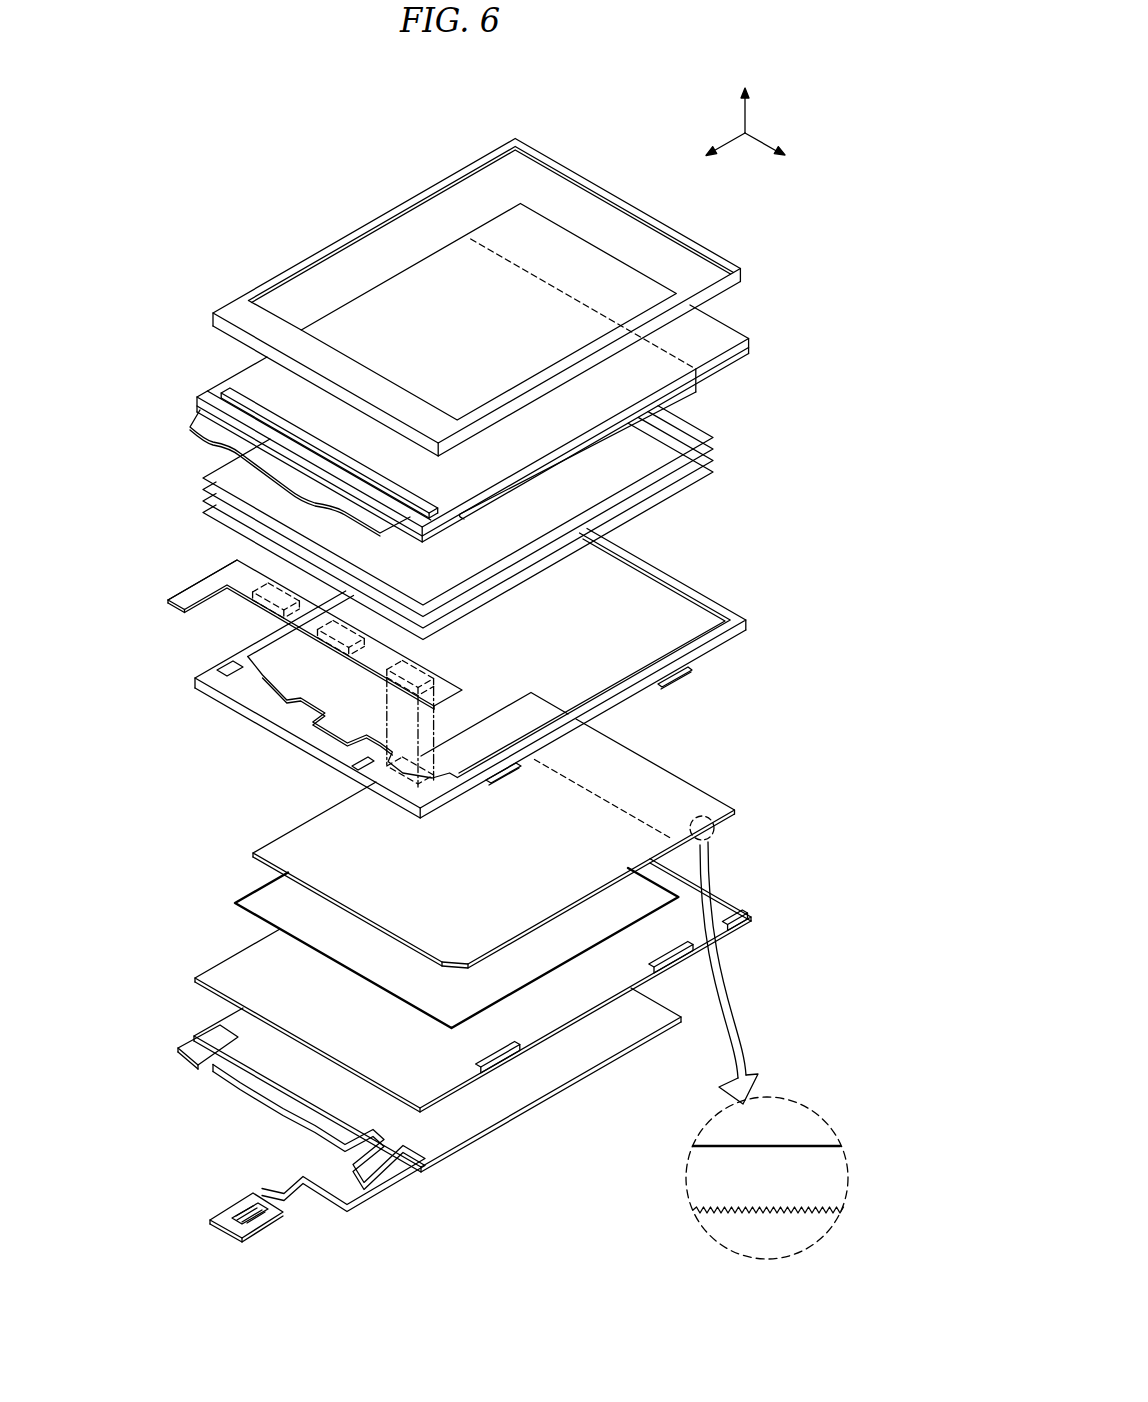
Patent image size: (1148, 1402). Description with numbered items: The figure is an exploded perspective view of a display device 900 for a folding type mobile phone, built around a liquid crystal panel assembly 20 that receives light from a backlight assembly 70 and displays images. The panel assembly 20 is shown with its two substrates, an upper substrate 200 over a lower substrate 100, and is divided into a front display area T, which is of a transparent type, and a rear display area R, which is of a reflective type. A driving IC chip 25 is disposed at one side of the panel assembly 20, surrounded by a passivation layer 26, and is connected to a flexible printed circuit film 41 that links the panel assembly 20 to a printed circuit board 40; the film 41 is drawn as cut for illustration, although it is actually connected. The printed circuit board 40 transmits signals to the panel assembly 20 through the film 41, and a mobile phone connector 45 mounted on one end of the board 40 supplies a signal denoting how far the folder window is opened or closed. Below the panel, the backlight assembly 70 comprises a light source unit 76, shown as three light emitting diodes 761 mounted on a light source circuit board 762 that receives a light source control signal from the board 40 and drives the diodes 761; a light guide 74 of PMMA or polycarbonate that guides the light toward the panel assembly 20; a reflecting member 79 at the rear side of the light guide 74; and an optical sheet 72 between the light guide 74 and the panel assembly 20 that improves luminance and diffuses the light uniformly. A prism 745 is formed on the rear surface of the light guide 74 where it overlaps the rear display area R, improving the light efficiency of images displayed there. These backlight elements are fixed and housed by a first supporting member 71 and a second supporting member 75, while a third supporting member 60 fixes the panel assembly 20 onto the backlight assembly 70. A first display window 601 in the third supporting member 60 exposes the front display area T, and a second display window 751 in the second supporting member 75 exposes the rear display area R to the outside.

The display device 900 is at (459, 126).
The third supporting member 60 is at (493, 292).
The first display window 601 is at (583, 177).
The panel assembly 20 is at (496, 390).
The upper substrate 200 is at (752, 339).
The lower substrate 100 is at (752, 352).
The driving IC chip 25 is at (222, 396).
The passivation layer 26 is at (205, 385).
The flexible printed circuit film 41 is at (192, 424).
The mobile phone connector 45 is at (248, 1208).
The optical sheet 72 is at (719, 437).
The front display area T is at (588, 451).
The rear display area R is at (697, 390).
The backlight assembly 70 is at (800, 433).
The first supporting member 71 is at (750, 622).
The light source unit 76 is at (263, 673).
The light emitting diodes 761 is at (270, 604).
The light source circuit board 762 is at (168, 604).
The light guide 74 is at (718, 802).
The prism 745 is at (808, 1158).
The reflecting member 79 is at (545, 982).
The second supporting member 75 is at (501, 985).
The second display window 751 is at (740, 934).
The printed circuit board 40 is at (656, 1034).